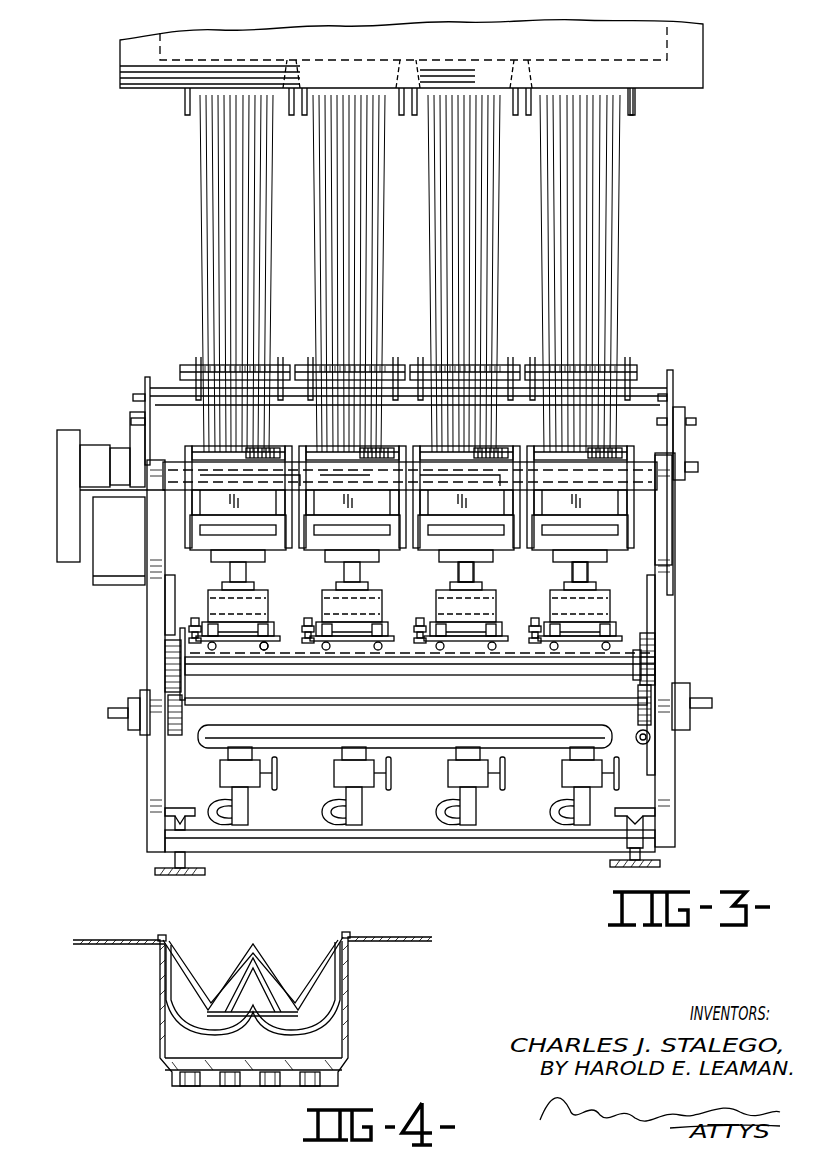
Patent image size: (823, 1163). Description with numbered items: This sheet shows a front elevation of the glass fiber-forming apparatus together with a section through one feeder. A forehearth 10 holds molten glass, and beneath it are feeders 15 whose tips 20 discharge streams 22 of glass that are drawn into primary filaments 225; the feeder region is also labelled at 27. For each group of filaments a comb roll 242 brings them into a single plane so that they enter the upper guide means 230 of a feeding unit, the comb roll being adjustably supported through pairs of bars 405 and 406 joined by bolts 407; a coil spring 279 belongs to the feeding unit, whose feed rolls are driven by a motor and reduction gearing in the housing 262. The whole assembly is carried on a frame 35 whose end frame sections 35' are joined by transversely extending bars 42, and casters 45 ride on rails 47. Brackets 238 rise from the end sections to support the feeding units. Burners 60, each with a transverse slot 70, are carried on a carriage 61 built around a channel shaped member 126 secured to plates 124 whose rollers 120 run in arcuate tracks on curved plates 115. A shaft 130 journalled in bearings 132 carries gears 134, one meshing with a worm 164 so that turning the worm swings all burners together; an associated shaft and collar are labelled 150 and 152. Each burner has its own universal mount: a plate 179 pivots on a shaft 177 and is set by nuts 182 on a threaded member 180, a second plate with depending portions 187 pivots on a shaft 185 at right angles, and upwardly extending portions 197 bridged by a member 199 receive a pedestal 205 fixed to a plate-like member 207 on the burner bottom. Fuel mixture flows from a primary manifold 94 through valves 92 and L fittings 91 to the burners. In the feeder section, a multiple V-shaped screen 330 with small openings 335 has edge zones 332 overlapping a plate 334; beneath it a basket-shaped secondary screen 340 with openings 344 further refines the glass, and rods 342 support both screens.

In FIG. 3, the forehearth 10 is at (703, 68).
In FIG. 3, the feeder 15 is at (600, 96).
In FIG. 4, the feeder 15 is at (150, 1009).
In FIG. 4, the tips 20 is at (222, 1090).
In FIG. 3, the streams 22 is at (215, 152).
In FIG. 3, the guide pins 27 is at (180, 102).
In FIG. 3, the comb roll 242 is at (636, 366).
In FIG. 3, the bars 405 is at (145, 388).
In FIG. 3, the bars 406 is at (137, 444).
In FIG. 3, the bolts 407 is at (133, 421).
In FIG. 3, the upper guide means 230 is at (428, 446).
In FIG. 3, the primary filaments 225 is at (562, 426).
In FIG. 3, the coil spring 279 is at (614, 457).
In FIG. 3, the slot 70 is at (258, 532).
In FIG. 3, the burner 60 is at (190, 548).
In FIG. 3, the bracket 238 is at (148, 535).
In FIG. 3, the end frame sections 35' is at (410, 693).
In FIG. 3, the frame 35 is at (411, 676).
In FIG. 3, the arcuately shaped plate 115 is at (166, 600).
In FIG. 3, the rollers 120 is at (168, 665).
In FIG. 3, the plates 124 is at (183, 635).
In FIG. 3, the bearings 132 is at (150, 698).
In FIG. 3, the gears 134 is at (170, 735).
In FIG. 3, the shaft 150 is at (125, 726).
In FIG. 3, the collar 152 is at (130, 714).
In FIG. 3, the worm 164 is at (650, 745).
In FIG. 3, the housing 262 is at (92, 529).
In FIG. 3, the upwardly extending portions 197 is at (300, 610).
In FIG. 3, the member 199 is at (445, 600).
In FIG. 3, the pedestal 205 is at (473, 570).
In FIG. 3, the plate-like member 207 is at (378, 548).
In FIG. 3, the plate 179 is at (300, 633).
In FIG. 3, the threaded member 180 is at (425, 636).
In FIG. 3, the nuts 182 is at (420, 644).
In FIG. 3, the shaft 185 is at (470, 625).
In FIG. 3, the depending portions 187 is at (480, 636).
In FIG. 3, the shaft 177 is at (496, 653).
In FIG. 3, the channel shaped member 126 is at (266, 672).
In FIG. 3, the carriage 61 is at (400, 684).
In FIG. 3, the shaft 130 is at (540, 712).
In FIG. 3, the primary manifold 94 is at (400, 748).
In FIG. 3, the valve 92 is at (272, 782).
In FIG. 3, the L 91 is at (476, 812).
In FIG. 3, the transversely extending bars 42 is at (370, 850).
In FIG. 3, the casters 45 is at (167, 826).
In FIG. 3, the rails 47 is at (207, 872).
In FIG. 4, the edge zones 332 is at (160, 940).
In FIG. 4, the openings 335 is at (232, 968).
In FIG. 4, the screen 330 is at (258, 950).
In FIG. 4, the plate 334 is at (385, 944).
In FIG. 4, the openings 344 is at (340, 1010).
In FIG. 4, the secondary screen 340 is at (338, 1018).
In FIG. 4, the rods 342 is at (254, 1020).